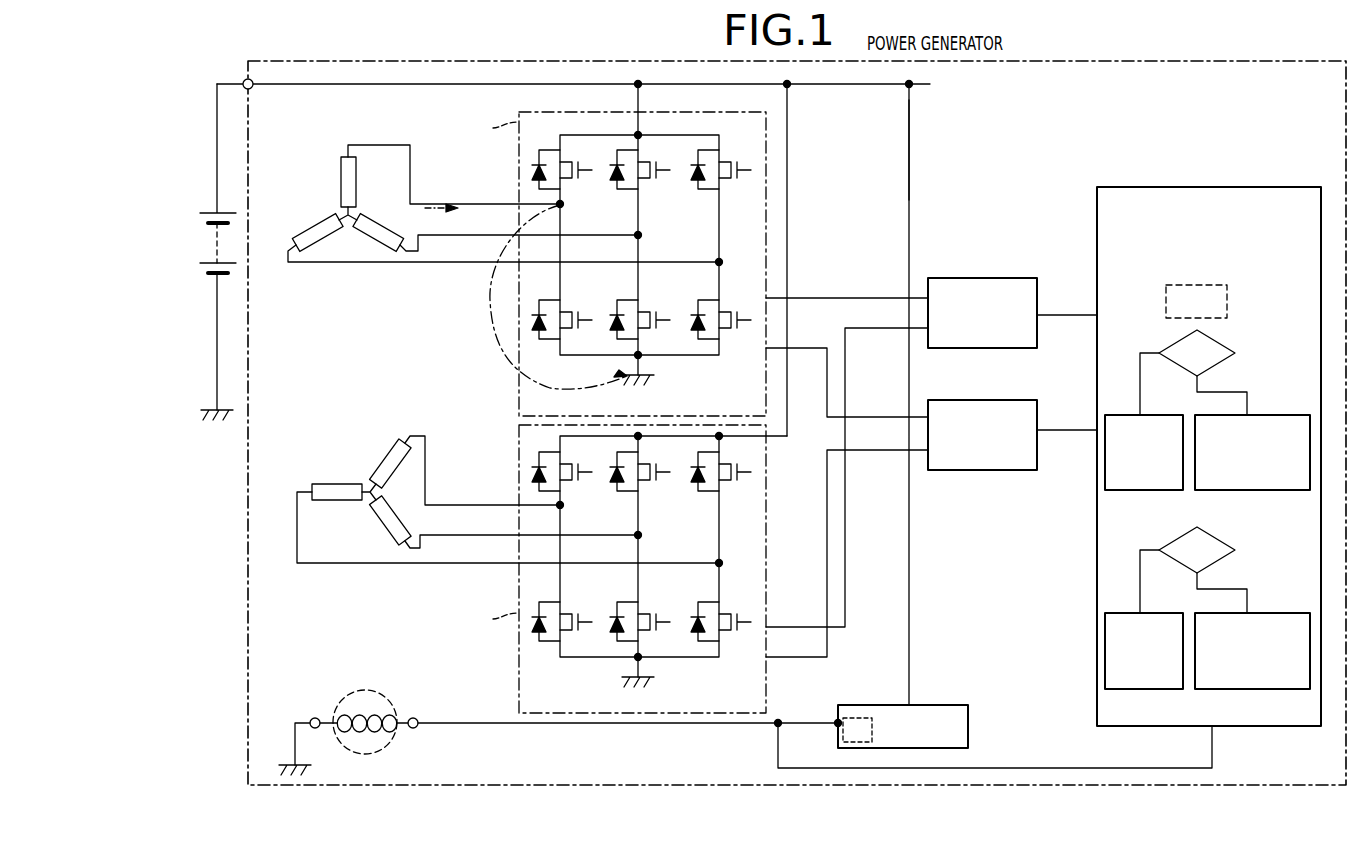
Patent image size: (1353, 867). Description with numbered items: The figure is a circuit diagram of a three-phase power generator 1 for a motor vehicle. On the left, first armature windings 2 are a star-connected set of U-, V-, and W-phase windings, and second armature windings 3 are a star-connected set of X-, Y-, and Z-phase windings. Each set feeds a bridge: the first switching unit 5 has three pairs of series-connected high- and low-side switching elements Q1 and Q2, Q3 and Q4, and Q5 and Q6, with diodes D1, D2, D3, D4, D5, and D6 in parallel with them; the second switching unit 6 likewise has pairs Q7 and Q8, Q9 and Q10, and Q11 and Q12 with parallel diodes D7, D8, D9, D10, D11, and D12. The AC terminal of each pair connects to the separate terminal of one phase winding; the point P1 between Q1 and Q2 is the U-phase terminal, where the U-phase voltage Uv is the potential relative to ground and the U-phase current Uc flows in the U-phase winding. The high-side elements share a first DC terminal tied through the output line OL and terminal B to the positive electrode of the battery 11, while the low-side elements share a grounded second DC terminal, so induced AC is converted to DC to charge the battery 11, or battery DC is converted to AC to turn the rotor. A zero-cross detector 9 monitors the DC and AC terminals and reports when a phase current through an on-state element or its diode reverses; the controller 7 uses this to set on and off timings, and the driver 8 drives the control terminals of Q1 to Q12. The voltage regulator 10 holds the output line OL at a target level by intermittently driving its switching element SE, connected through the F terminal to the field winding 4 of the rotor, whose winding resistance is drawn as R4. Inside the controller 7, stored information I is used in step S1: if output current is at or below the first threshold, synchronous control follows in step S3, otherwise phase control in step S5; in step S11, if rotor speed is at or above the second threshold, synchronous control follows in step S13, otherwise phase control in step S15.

The power generator 1 is at (1100, 60).
The first armature windings 2 is at (323, 198).
The second armature windings 3 is at (362, 475).
The field winding 4 is at (558, 710).
The first switching unit 5 is at (559, 250).
The second switching unit 6 is at (569, 569).
The controller 7 is at (1209, 431).
The driver 8 is at (983, 400).
The zero-cross detector 9 is at (983, 278).
The voltage regulator 10 is at (903, 705).
The battery 11 is at (212, 212).
The field coil resistance R4 is at (386, 748).
The terminal B is at (573, 74).
The output line OL is at (856, 90).
The point P1 is at (562, 206).
The F terminal F is at (836, 725).
The switching element SE is at (857, 730).
The U-phase current Uc is at (440, 194).
The U-phase voltage Uv is at (552, 297).
The high-side switching element Q1 is at (576, 183).
The low-side switching element Q2 is at (576, 307).
The high-side switching element Q3 is at (655, 183).
The low-side switching element Q4 is at (655, 307).
The high-side switching element Q5 is at (736, 183).
The low-side switching element Q6 is at (735, 307).
The high-side switching element Q7 is at (576, 486).
The low-side switching element Q8 is at (576, 609).
The high-side switching element Q9 is at (655, 486).
The low-side switching element Q10 is at (662, 609).
The high-side switching element Q11 is at (741, 486).
The low-side switching element Q12 is at (741, 609).
The diode D1 is at (543, 158).
The diode D2 is at (542, 331).
The diode D3 is at (613, 165).
The diode D4 is at (614, 326).
The diode D5 is at (693, 165).
The diode D6 is at (693, 326).
The diode D7 is at (542, 460).
The diode D8 is at (542, 633).
The diode D9 is at (613, 467).
The diode D10 is at (607, 628).
The diode D11 is at (688, 467).
The diode D12 is at (687, 628).
The step S1 is at (1220, 340).
The step S3 is at (1290, 415).
The step S5 is at (1115, 415).
The step S11 is at (1220, 537).
The step S13 is at (1290, 613).
The step S15 is at (1115, 613).